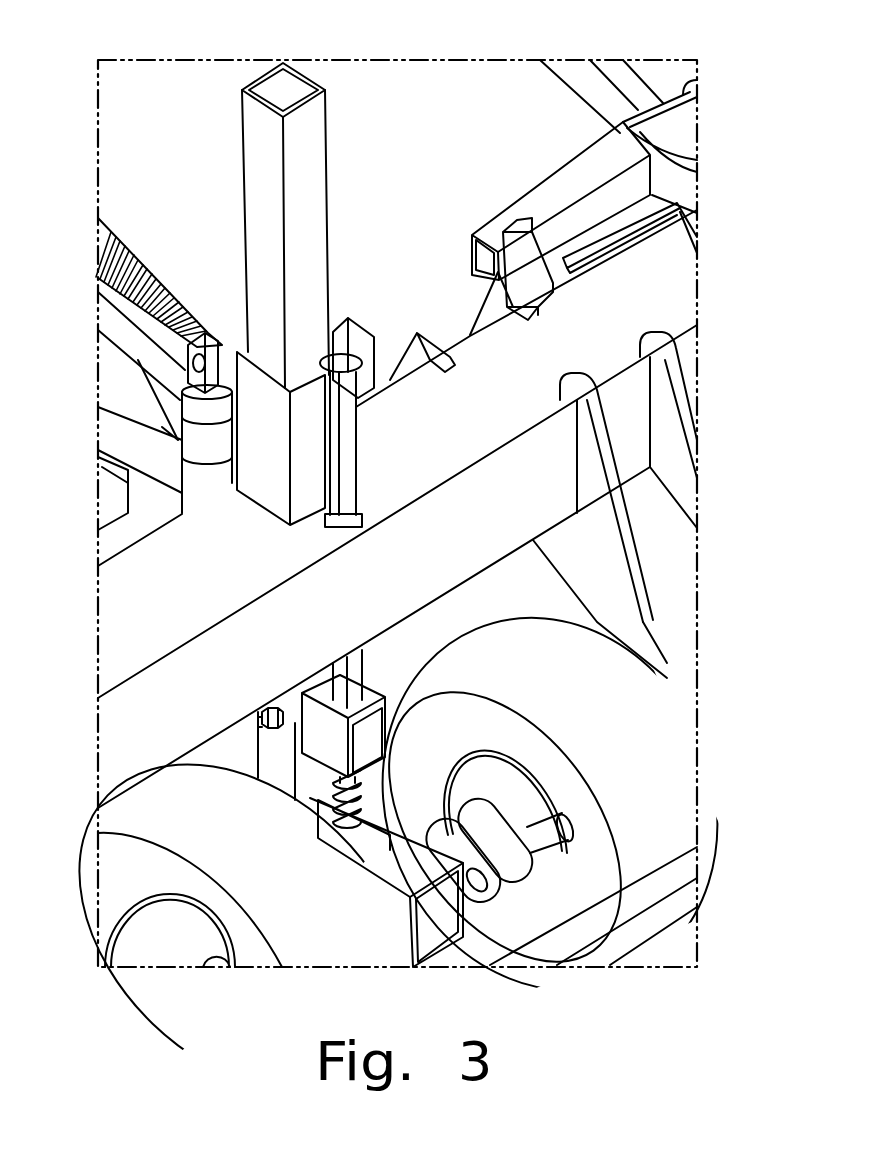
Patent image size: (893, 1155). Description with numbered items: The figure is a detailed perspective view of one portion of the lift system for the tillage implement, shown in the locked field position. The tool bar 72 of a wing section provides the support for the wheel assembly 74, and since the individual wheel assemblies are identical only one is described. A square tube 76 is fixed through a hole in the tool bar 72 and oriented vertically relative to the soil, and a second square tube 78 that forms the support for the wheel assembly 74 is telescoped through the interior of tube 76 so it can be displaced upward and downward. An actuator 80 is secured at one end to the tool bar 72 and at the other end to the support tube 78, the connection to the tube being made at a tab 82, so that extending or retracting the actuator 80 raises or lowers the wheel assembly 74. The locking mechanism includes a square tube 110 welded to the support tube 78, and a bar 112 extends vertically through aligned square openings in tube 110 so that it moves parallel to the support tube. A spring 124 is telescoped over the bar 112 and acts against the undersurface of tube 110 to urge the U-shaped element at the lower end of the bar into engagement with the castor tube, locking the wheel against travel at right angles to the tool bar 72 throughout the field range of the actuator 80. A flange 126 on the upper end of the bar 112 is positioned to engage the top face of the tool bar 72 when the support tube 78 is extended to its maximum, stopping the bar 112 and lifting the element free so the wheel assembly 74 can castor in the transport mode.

The tool bar 72 is at (658, 283).
The wheel assembly 74 is at (713, 792).
The square tube 76 is at (268, 496).
The square tube (support tube) 78 is at (262, 118).
The actuator 80 is at (203, 410).
The tab 82 is at (257, 720).
The square tube 110 is at (377, 700).
The bar 112 is at (350, 447).
The spring 124 is at (387, 783).
The flange 126 is at (348, 357).